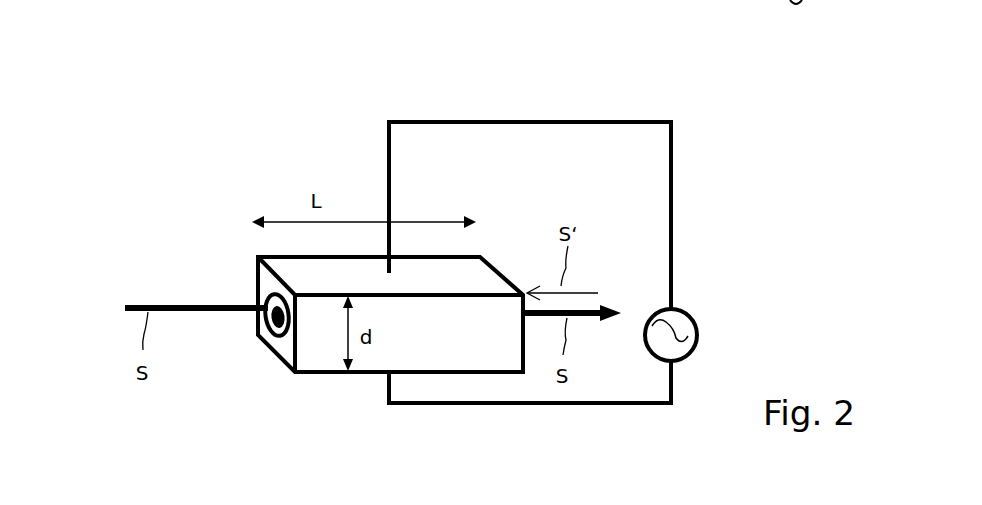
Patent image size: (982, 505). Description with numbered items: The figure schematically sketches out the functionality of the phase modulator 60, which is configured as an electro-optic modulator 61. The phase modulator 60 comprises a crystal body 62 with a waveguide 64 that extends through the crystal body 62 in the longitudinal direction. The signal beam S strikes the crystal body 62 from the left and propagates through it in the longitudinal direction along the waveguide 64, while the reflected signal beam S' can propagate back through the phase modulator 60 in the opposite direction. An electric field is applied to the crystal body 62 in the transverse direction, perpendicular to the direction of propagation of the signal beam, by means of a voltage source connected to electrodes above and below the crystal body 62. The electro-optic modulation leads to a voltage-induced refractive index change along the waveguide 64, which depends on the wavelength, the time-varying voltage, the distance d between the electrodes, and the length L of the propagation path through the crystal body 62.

The phase modulator 60 is at (554, 82).
The electro-optic modulator 61 is at (360, 134).
The crystal body 62 is at (371, 357).
The waveguide 64 is at (277, 337).